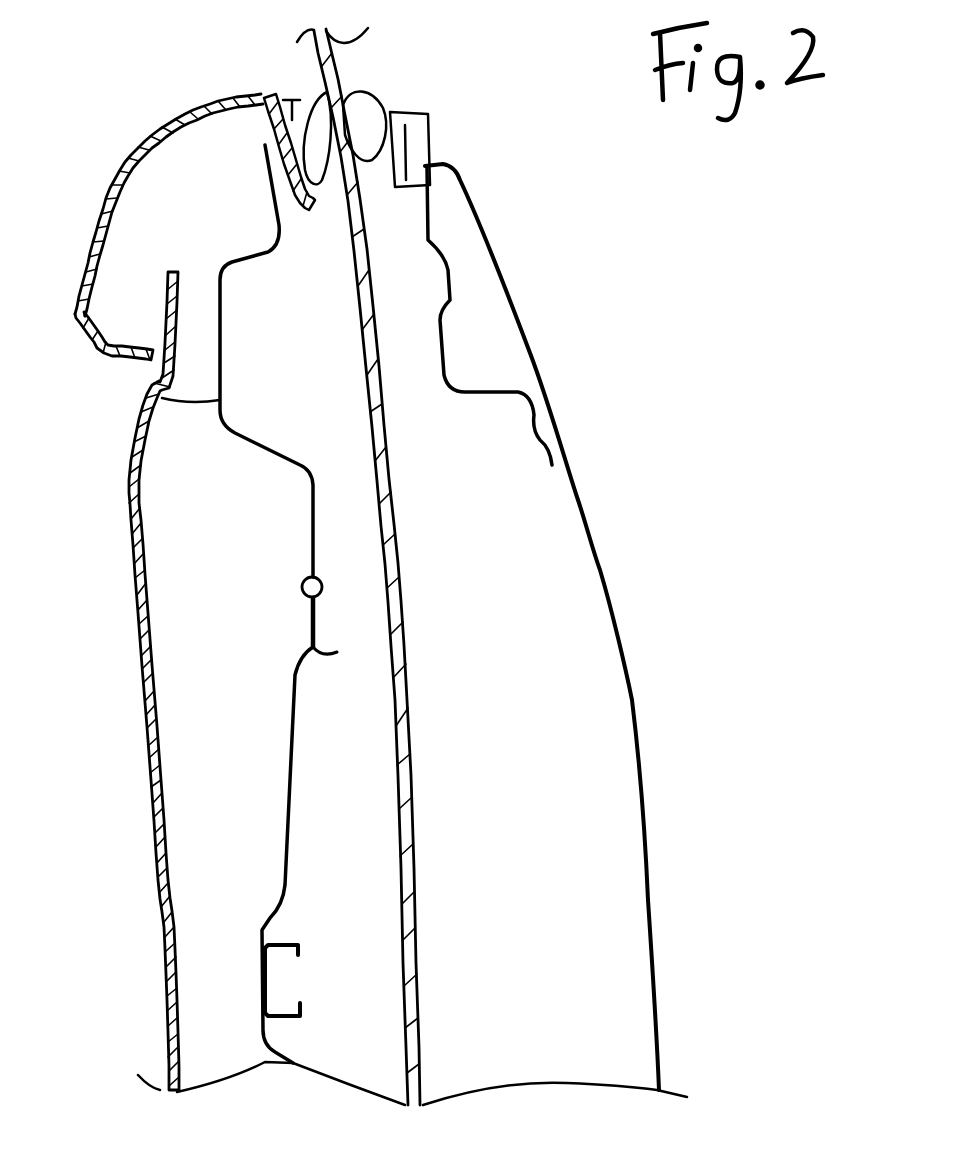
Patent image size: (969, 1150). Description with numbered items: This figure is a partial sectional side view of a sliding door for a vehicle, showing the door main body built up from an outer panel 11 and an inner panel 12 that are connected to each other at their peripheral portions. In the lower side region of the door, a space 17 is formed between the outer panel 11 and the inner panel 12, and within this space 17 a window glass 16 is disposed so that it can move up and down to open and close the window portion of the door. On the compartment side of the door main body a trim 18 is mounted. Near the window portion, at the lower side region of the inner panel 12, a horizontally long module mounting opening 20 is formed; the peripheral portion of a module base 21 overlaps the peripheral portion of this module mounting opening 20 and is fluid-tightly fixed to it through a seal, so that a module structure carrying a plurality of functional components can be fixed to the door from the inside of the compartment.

The outer panel 11 is at (577, 458).
The inner panel 12 is at (148, 393).
The window glass 16 is at (400, 545).
The space 17 is at (565, 737).
The trim 18 is at (158, 865).
The module mounting opening 20 is at (335, 653).
The module base 21 is at (287, 789).